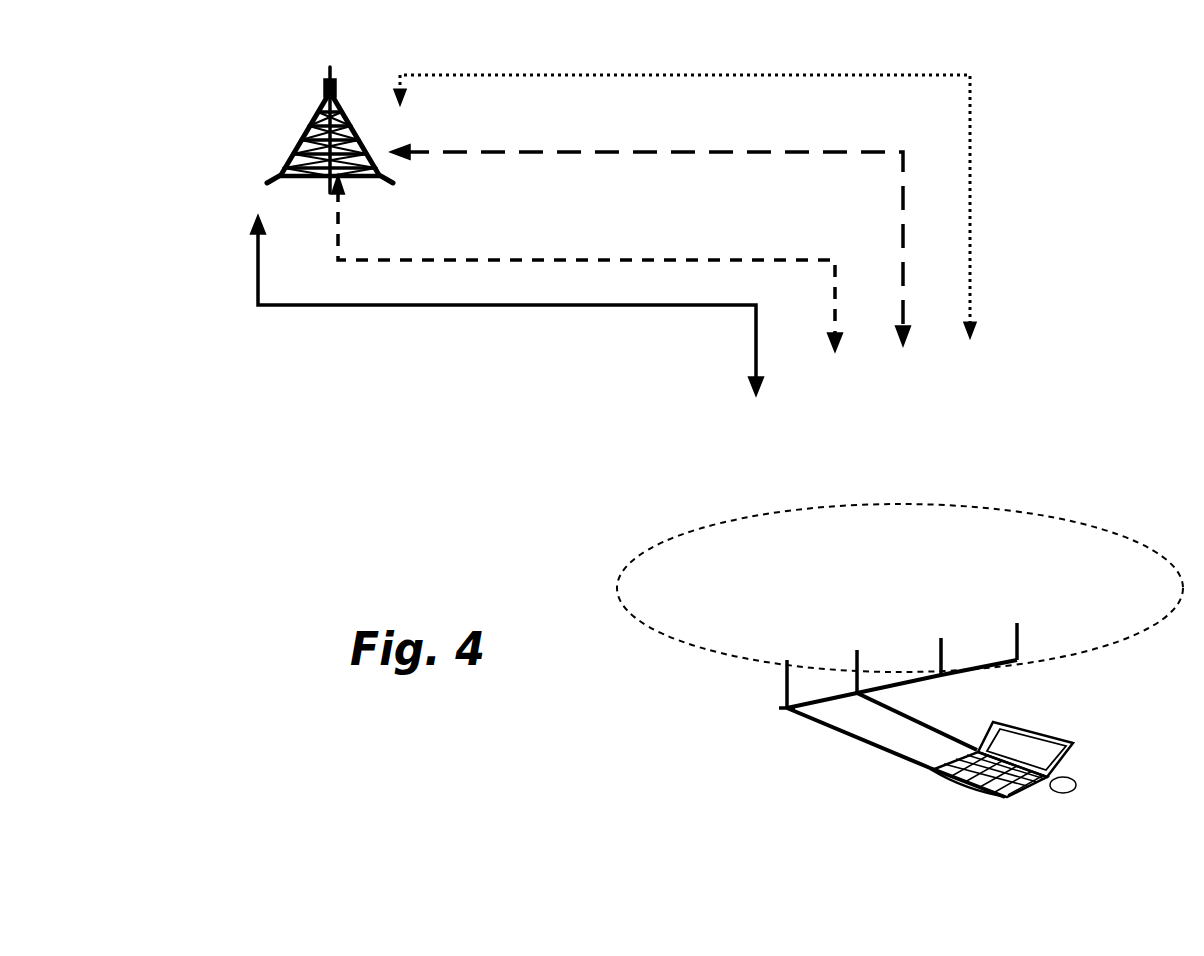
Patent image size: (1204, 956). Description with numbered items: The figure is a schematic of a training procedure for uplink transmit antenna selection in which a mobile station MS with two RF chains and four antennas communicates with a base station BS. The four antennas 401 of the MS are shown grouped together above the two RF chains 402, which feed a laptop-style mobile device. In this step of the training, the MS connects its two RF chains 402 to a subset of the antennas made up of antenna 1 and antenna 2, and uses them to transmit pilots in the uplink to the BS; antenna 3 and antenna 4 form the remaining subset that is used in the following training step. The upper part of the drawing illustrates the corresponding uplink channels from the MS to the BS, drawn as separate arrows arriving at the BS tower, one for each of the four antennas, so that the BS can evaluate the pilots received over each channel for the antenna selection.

The four antennas 401 is at (1052, 518).
The two RF chains 402 is at (916, 780).
The base station BS is at (326, 102).
The mobile station MS is at (1004, 773).
The antenna 1 is at (507, 305).
The antenna 2 is at (587, 263).
The antenna 3 is at (651, 238).
The antenna 4 is at (685, 191).